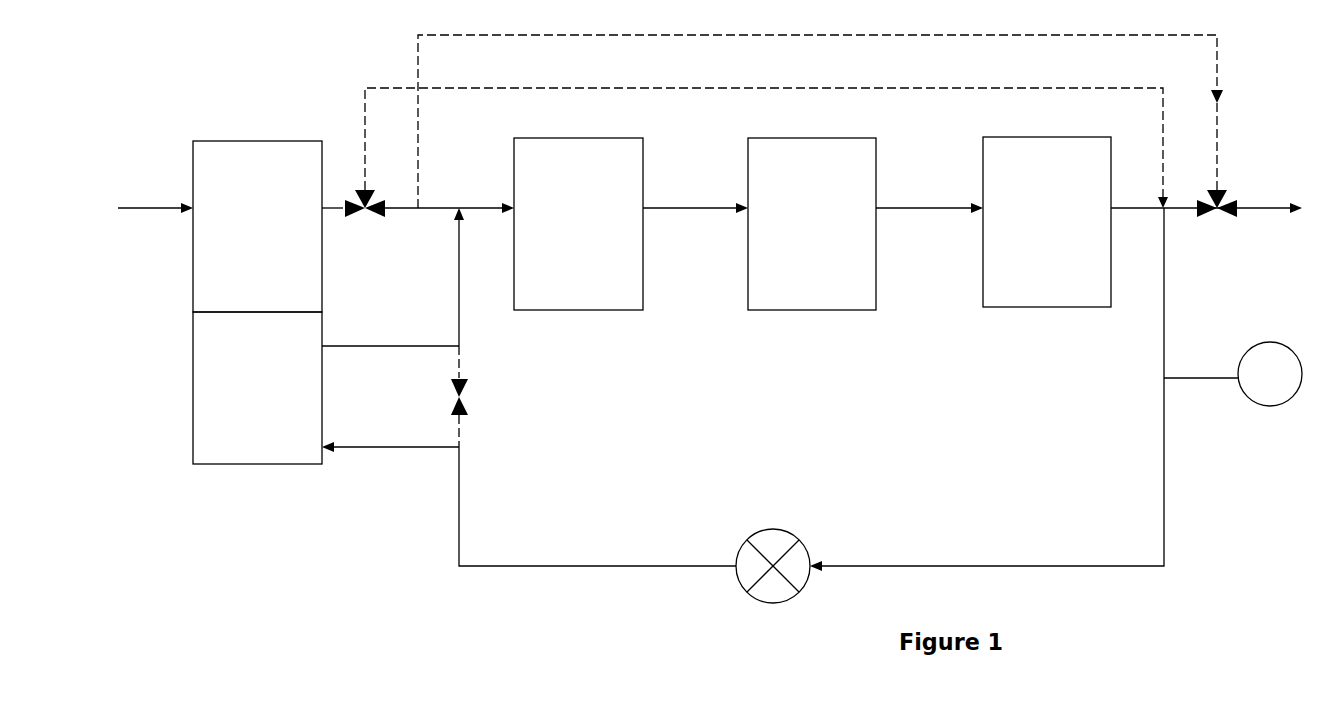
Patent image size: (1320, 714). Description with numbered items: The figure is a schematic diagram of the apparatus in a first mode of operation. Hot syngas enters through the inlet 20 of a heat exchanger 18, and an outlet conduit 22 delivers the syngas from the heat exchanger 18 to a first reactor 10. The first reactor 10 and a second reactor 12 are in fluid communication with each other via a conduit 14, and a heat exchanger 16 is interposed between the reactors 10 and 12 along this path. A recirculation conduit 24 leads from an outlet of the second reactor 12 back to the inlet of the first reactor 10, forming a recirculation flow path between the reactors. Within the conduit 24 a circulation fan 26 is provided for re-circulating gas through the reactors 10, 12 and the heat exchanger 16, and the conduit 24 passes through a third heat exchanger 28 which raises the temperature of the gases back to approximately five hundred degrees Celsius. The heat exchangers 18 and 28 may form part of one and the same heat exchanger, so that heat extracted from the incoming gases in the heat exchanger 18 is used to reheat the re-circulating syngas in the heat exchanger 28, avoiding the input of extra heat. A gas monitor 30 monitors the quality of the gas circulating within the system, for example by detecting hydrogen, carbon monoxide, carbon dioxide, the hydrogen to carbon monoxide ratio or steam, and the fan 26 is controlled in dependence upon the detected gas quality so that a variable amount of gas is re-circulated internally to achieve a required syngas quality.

The first reactor 10 is at (561, 206).
The second reactor 12 is at (1030, 206).
The conduit 14 is at (667, 206).
The heat exchanger 16 is at (796, 206).
The heat exchanger 18 is at (241, 224).
The inlet 20 is at (164, 206).
The outlet conduit 22 is at (397, 211).
The recirculation conduit 24 is at (944, 562).
The circulation fan 26 is at (792, 533).
The heat exchanger 28 is at (239, 381).
The gas monitor 30 is at (1258, 374).